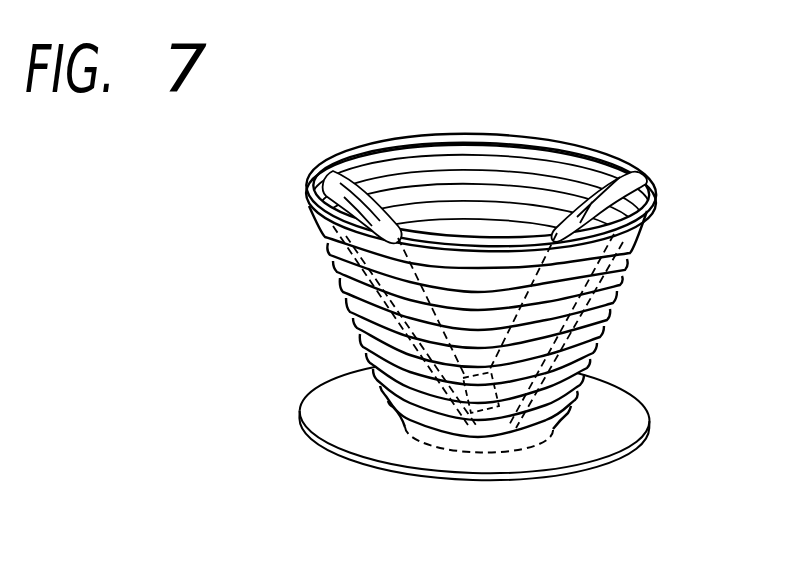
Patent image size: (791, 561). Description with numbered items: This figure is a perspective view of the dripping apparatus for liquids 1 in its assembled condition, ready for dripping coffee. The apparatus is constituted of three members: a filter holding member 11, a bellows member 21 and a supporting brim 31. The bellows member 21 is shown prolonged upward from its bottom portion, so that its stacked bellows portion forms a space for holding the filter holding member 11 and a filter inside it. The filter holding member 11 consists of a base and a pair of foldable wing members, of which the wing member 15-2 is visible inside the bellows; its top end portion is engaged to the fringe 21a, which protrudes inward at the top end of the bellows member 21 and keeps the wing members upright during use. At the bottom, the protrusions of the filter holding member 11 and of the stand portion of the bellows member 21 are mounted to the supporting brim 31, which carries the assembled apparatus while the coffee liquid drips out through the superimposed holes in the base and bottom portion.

The dripping apparatus for liquids 1 is at (320, 303).
The filter holding member 11 is at (392, 200).
The wing member 15-2 is at (587, 190).
The bellows member 21 is at (616, 290).
The fringe 21a is at (640, 180).
The supporting brim 31 is at (603, 463).